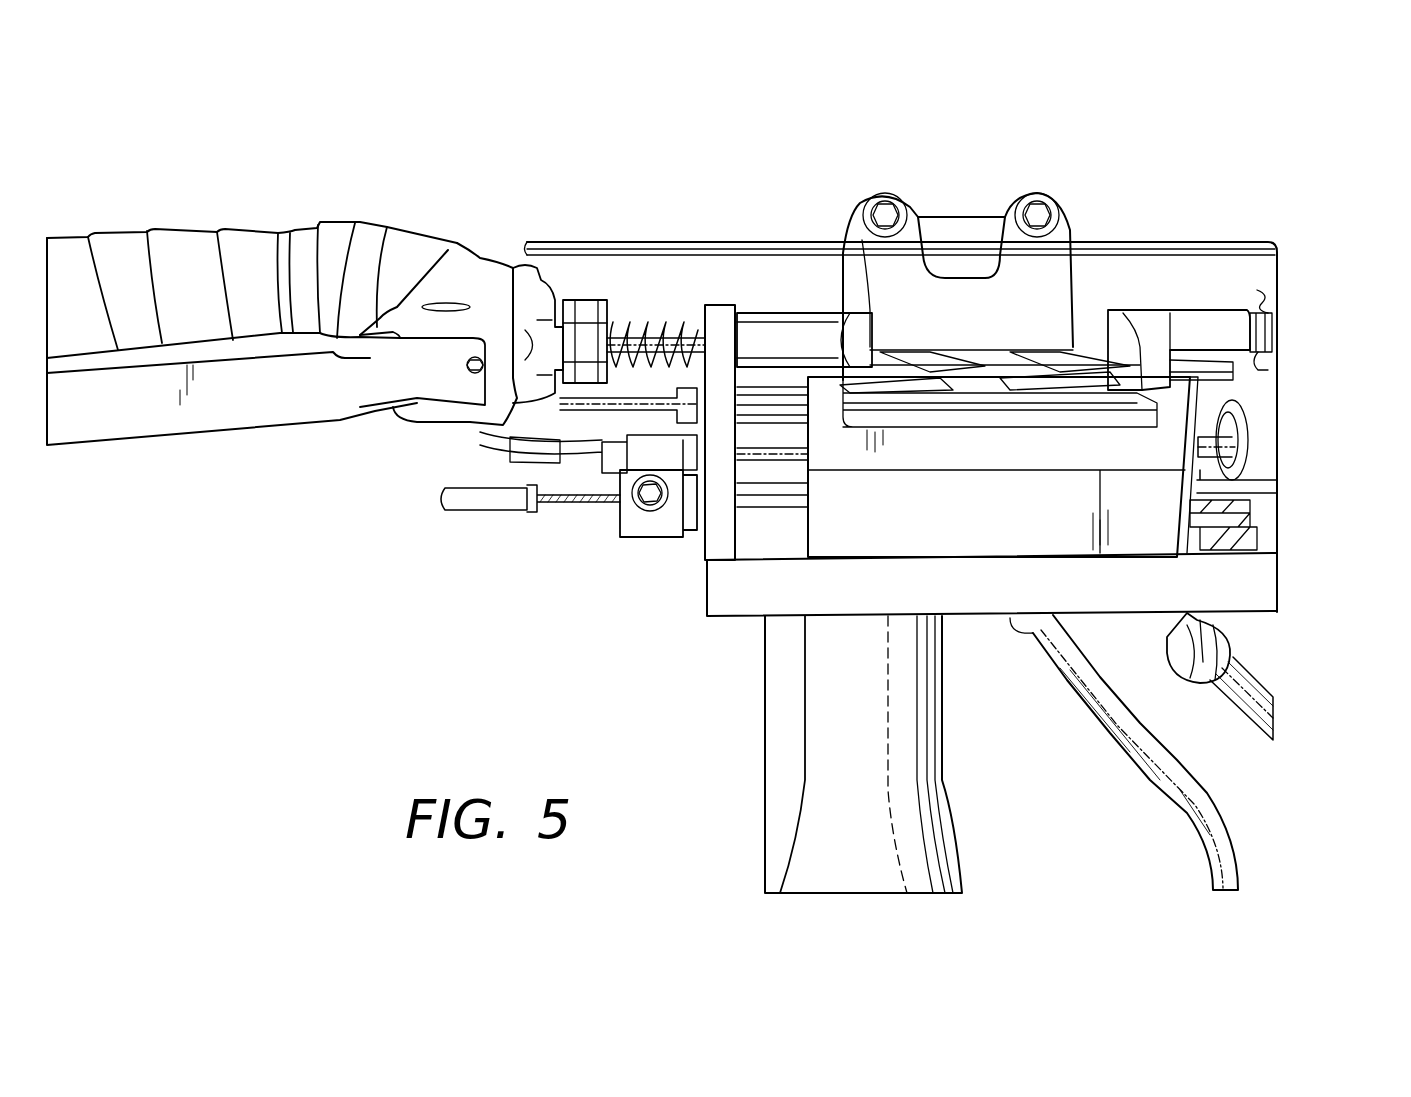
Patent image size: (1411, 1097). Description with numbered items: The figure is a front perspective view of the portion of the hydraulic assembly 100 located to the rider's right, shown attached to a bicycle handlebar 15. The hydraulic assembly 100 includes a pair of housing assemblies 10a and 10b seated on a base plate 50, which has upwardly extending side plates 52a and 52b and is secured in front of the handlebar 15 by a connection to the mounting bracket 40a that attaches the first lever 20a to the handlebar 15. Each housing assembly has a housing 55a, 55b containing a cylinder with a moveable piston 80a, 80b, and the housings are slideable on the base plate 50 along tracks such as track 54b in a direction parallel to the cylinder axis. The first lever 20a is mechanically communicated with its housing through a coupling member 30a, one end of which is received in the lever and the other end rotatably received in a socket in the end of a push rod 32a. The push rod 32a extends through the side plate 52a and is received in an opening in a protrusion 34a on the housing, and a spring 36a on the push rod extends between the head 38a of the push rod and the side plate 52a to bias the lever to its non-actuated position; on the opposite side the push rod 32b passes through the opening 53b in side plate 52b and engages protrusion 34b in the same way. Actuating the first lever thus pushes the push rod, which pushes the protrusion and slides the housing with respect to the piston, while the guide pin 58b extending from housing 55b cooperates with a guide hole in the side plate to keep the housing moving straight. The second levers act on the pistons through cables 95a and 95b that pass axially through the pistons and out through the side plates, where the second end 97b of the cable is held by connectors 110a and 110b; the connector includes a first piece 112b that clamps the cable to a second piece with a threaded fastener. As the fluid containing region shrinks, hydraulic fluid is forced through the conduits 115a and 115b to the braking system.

The hydraulic assembly 100 is at (210, 160).
The bicycle handlebar 15 is at (386, 252).
The first lever 20a is at (122, 415).
The mounting bracket 40a is at (468, 262).
The coupling member 30a is at (526, 340).
The head of push rod 38a is at (575, 308).
The push rod 32a is at (630, 330).
The spring 36a is at (643, 335).
The side plate 52a is at (717, 330).
The protrusion 34a is at (772, 335).
The housing assembly 10a is at (1098, 310).
The housing 55a is at (1012, 360).
The protrusion 34b is at (1220, 330).
The side plate 52b is at (1262, 312).
The push rod 32b is at (1262, 290).
The opening 53b is at (1270, 362).
The housing 55b is at (1003, 467).
The housing assembly 10b is at (1192, 587).
The guide pin 58b is at (780, 490).
The piston 80b is at (796, 556).
The cable 95a is at (500, 420).
The second end of cable 97b is at (577, 490).
The connector 110b is at (582, 532).
The first piece of connector 112b is at (645, 525).
The connector 110a is at (1240, 437).
The piston 80a is at (1215, 455).
The cable 95b is at (1265, 472).
The track 54b is at (1260, 540).
The base plate 50 is at (905, 585).
The conduit 115a is at (993, 618).
The conduit 115b is at (1150, 628).